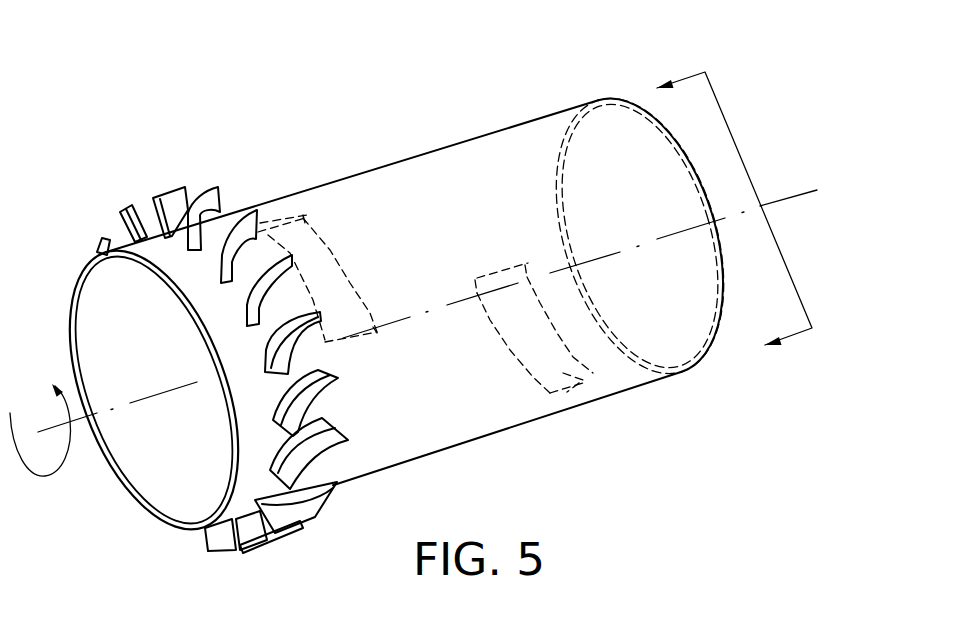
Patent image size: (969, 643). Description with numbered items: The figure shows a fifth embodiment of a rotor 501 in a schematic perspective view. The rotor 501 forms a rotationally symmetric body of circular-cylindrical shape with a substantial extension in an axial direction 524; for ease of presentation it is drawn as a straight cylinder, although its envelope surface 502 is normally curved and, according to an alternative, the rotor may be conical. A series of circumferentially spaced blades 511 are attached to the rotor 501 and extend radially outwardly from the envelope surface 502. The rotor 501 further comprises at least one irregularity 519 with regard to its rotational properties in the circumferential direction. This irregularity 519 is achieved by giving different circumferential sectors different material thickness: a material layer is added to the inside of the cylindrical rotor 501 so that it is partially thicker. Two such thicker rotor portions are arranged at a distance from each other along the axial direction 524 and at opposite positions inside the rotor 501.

The rotor 501 is at (208, 70).
The envelope surface 502 is at (458, 415).
The blades 511 is at (157, 208).
The irregularity 519 is at (327, 255).
The axial direction 524 is at (797, 197).